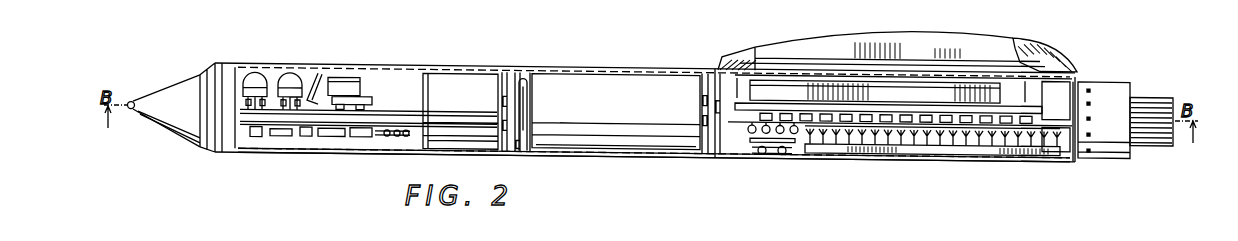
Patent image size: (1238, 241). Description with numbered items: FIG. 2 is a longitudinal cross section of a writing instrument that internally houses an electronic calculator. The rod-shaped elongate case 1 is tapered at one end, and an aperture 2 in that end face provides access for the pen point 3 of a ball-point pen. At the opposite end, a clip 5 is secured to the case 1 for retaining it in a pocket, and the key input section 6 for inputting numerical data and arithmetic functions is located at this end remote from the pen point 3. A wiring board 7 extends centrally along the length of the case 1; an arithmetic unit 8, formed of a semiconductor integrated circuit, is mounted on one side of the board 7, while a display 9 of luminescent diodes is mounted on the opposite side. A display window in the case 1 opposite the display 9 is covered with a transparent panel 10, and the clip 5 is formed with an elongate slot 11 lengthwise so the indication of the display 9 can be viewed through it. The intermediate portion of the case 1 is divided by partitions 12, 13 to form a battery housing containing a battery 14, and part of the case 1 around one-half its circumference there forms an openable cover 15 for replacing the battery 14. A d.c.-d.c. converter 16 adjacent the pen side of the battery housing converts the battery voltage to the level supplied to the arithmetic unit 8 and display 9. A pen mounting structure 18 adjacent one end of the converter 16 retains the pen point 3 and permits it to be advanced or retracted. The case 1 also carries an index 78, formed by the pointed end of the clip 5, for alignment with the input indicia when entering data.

The case 1 is at (386, 65).
The aperture 2 is at (134, 101).
The pen point 3 is at (131, 109).
The clip 5 is at (1050, 56).
The key input section 6 is at (1150, 157).
The wiring board 7 is at (742, 150).
The arithmetic unit 8 is at (930, 144).
The display 9 is at (893, 84).
The transparent panel 10 is at (926, 68).
The elongate slot 11 is at (1015, 56).
The partition 12 is at (517, 77).
The partition 13 is at (716, 70).
The battery 14 is at (604, 85).
The openable cover 15 is at (605, 158).
The d.c.-d.c. converter 16 is at (300, 150).
The pen mounting structure 18 is at (178, 126).
The index 78 is at (1085, 80).